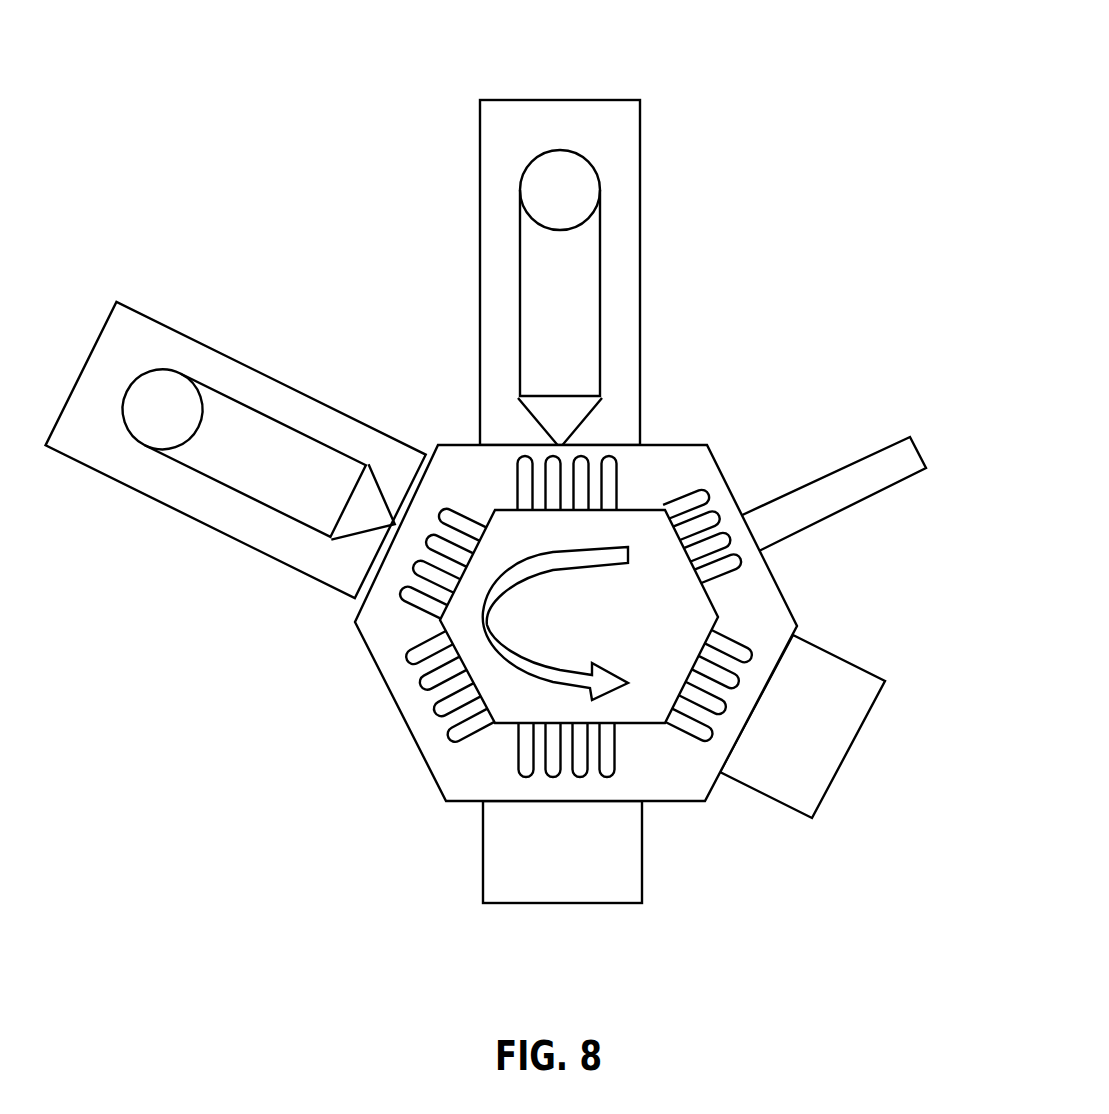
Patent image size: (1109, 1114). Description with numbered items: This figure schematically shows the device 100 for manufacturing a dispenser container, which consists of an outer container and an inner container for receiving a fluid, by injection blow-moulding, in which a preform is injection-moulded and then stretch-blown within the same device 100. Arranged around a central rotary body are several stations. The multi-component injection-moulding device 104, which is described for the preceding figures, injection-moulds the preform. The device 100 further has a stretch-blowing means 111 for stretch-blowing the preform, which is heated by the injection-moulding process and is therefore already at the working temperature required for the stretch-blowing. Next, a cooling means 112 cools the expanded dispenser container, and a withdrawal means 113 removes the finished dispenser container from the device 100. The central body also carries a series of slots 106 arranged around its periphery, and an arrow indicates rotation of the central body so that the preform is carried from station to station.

The device 100 is at (576, 407).
The multi-component injection-moulding device 104 is at (620, 316).
The slot 106 is at (625, 480).
The stretch-blowing means 111 is at (565, 880).
The cooling means 112 is at (827, 742).
The withdrawal means 113 is at (870, 478).